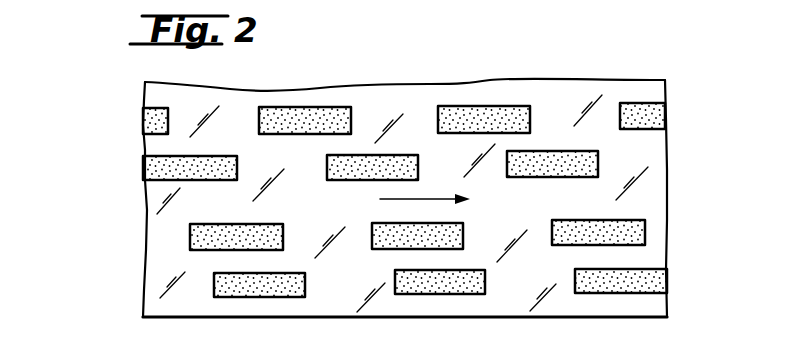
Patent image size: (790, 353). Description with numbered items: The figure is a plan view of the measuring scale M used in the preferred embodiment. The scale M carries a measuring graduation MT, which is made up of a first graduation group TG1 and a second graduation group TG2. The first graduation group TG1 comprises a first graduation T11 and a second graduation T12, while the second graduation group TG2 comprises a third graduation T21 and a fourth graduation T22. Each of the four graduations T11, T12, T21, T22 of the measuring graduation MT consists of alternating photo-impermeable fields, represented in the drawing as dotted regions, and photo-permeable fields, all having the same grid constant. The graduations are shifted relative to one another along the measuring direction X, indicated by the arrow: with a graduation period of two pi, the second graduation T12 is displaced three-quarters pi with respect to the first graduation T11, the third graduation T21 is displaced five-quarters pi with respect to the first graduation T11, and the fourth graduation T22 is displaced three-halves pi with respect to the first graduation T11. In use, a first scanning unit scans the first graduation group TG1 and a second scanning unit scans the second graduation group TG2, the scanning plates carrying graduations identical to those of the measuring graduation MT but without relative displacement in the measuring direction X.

The scale M is at (594, 320).
The measuring graduation MT is at (93, 121).
The first graduation group TG1 is at (673, 103).
The second graduation group TG2 is at (673, 220).
The first graduation T11 is at (148, 123).
The second graduation T12 is at (158, 173).
The third graduation T21 is at (162, 240).
The fourth graduation T22 is at (162, 283).
The measuring direction X is at (432, 199).